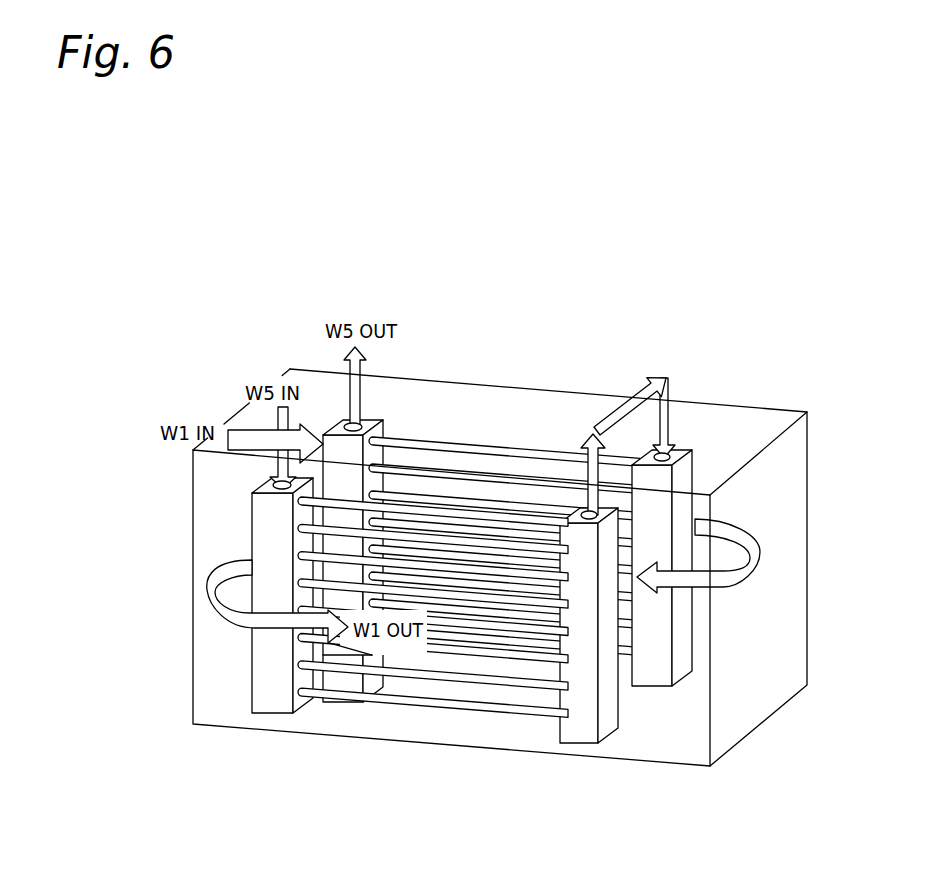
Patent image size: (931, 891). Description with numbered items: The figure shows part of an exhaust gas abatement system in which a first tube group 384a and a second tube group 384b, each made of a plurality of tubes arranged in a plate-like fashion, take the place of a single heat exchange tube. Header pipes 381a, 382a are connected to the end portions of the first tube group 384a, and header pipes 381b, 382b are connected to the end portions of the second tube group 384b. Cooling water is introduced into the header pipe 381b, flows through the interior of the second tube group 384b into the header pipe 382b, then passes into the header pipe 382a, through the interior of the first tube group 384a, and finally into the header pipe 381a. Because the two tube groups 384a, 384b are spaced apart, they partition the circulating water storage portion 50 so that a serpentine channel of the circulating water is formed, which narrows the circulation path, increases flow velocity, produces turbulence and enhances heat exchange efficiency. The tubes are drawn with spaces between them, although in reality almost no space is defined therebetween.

The circulating water storage portion 50 is at (567, 391).
The header pipe 381a is at (373, 419).
The header pipe 381b is at (268, 703).
The header pipe 382a is at (680, 448).
The header pipe 382b is at (578, 732).
The first tube group 384a is at (543, 510).
The second tube group 384b is at (492, 652).